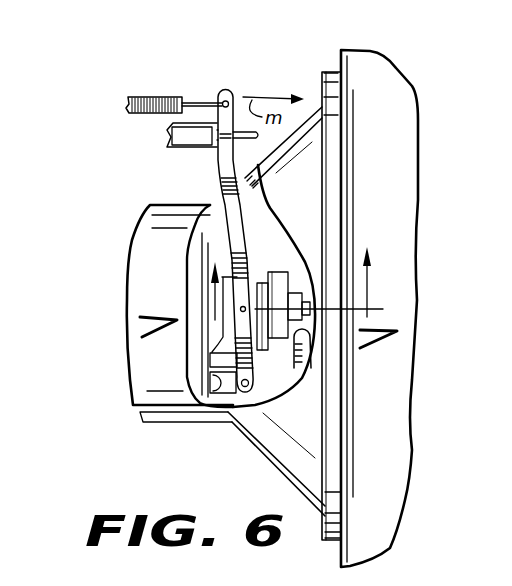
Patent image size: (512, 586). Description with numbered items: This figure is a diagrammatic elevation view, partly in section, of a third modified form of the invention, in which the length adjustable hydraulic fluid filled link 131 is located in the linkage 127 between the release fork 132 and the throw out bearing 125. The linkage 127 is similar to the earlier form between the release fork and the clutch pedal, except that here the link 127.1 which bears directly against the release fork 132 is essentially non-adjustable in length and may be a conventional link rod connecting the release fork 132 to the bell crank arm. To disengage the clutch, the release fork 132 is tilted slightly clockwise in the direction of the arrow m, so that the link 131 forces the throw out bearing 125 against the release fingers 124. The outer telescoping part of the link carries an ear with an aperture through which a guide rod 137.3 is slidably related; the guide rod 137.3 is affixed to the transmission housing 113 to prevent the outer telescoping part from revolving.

The transmission housing 113 is at (170, 417).
The release fingers 124 is at (306, 336).
The throw out bearing 125 is at (293, 280).
The linkage 127 is at (262, 82).
The link 127.1 is at (188, 140).
The length adjustable hydraulic fluid filled link 131 is at (265, 268).
The release fork 132 is at (222, 176).
The guide rod 137.3 is at (230, 328).